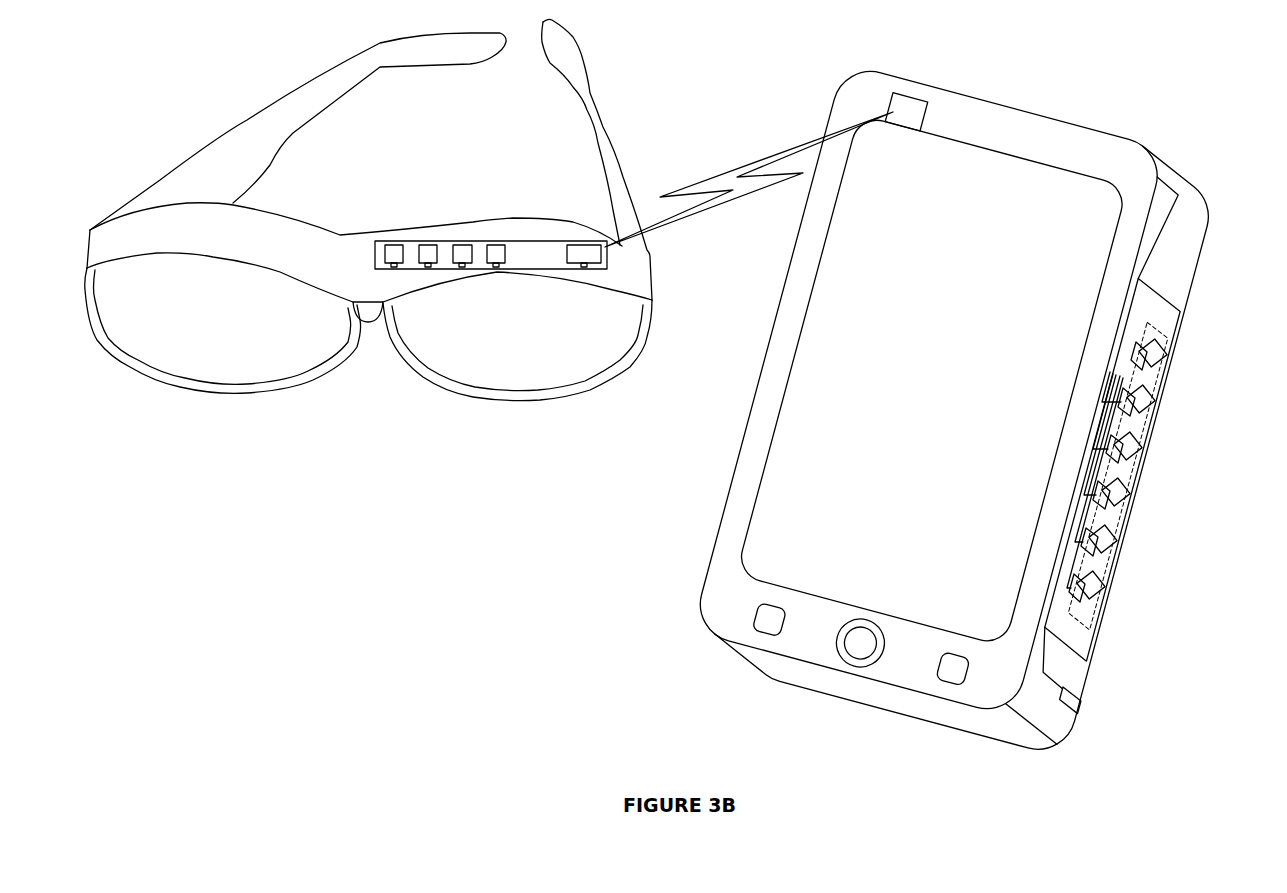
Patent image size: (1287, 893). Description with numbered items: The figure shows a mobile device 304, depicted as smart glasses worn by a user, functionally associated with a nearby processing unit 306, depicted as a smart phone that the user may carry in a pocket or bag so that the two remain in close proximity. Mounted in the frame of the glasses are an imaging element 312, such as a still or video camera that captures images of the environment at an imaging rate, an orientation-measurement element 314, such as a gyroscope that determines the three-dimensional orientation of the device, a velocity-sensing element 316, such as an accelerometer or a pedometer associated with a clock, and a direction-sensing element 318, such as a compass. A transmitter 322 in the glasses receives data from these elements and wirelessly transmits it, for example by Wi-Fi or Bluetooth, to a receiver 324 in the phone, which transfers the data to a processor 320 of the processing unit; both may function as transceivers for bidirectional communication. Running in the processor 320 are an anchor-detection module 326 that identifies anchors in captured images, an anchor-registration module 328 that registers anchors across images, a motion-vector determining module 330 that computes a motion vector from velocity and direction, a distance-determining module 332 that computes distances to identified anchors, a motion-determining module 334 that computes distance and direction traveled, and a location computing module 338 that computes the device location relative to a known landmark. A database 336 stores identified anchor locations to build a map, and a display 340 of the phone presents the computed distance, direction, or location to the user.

The mobile device 304 is at (128, 92).
The processing unit 306 is at (1229, 136).
The imaging element 312 is at (392, 243).
The orientation-measurement element 314 is at (428, 243).
The velocity-sensing element 316 is at (461, 243).
The direction-sensing element 318 is at (495, 243).
The transmitter 322 is at (580, 243).
The receiver 324 is at (893, 100).
The processor 320 is at (1168, 299).
The anchor-detection module 326 is at (1128, 499).
The anchor-registration module 328 is at (1116, 546).
The motion-vector determining module 330 is at (1165, 360).
The distance-determining module 332 is at (1152, 406).
The motion-determining module 334 is at (1140, 452).
The database 336 is at (1084, 704).
The location computing module 338 is at (1104, 592).
The display 340 is at (1077, 203).